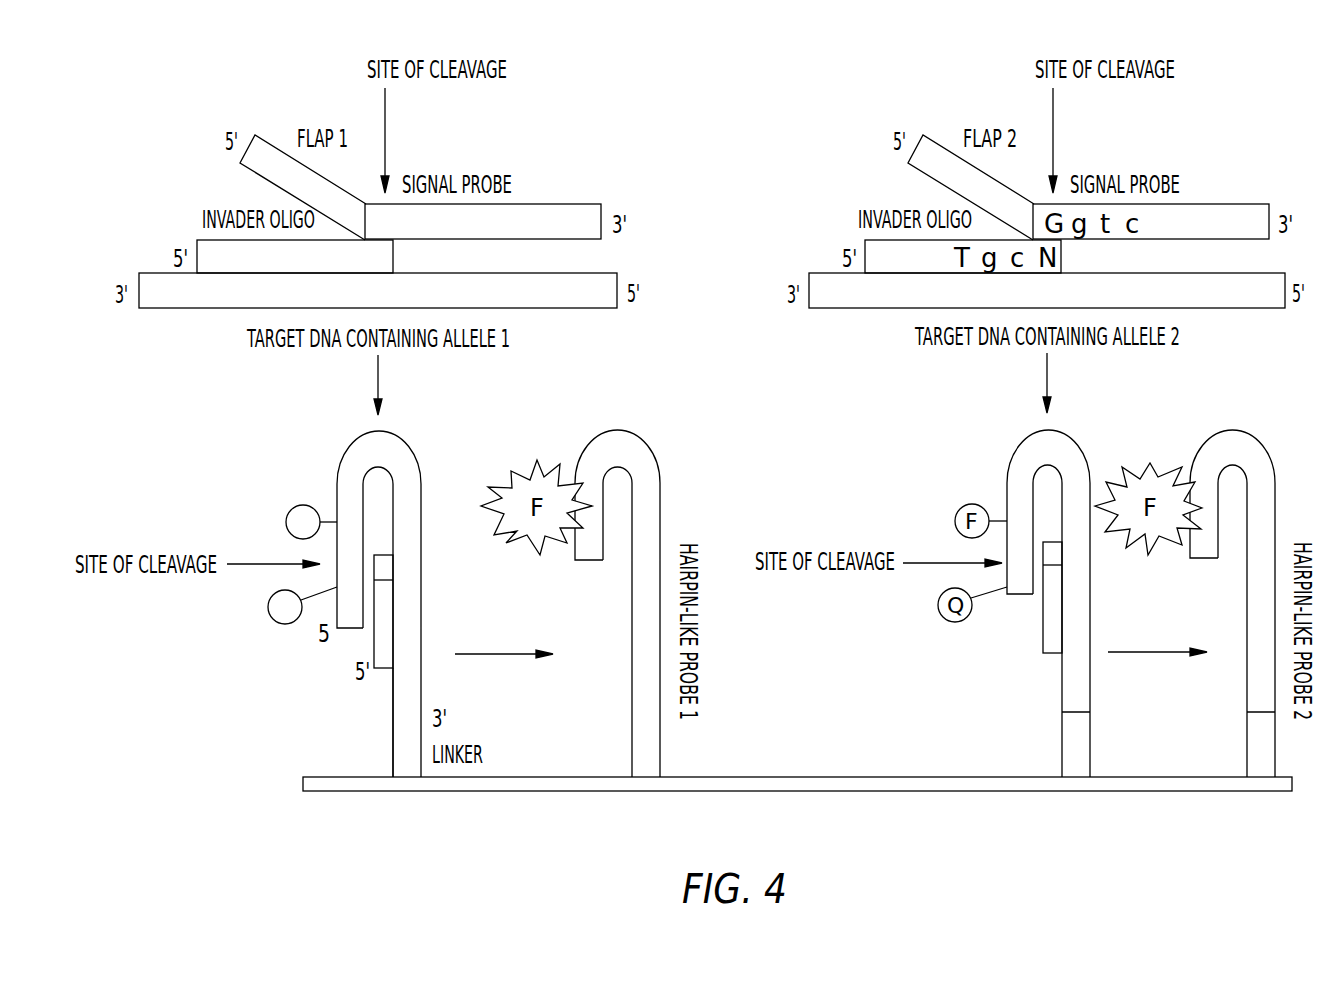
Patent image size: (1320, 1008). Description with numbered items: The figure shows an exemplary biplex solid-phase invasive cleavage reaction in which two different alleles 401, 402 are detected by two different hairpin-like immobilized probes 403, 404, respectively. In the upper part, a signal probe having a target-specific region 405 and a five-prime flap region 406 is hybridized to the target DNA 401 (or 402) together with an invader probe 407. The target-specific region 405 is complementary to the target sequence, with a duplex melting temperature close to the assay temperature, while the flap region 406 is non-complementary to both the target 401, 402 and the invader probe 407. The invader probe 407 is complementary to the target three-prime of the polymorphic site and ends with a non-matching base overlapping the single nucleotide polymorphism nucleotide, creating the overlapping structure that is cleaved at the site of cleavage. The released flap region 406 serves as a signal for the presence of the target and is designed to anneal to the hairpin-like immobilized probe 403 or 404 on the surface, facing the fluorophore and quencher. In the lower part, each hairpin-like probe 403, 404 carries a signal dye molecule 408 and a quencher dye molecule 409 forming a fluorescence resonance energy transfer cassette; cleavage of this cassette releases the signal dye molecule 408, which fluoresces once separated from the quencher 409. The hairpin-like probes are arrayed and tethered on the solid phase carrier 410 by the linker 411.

The target nucleic acid containing allele 1 401 is at (162, 273).
The target nucleic acid containing allele 2 402 is at (1028, 277).
The hairpin-like immobilized probe 403 is at (347, 449).
The hairpin-like immobilized probe 404 is at (1014, 446).
The target-specific region of signal probe 405 is at (584, 204).
The 5' flap region of signal probe 406 is at (266, 136).
The invader probe 407 is at (200, 240).
The signal dye molecule 408 is at (286, 522).
The quencher dye molecule 409 is at (268, 607).
The solid phase carrier 410 is at (527, 795).
The linker 411 is at (392, 748).